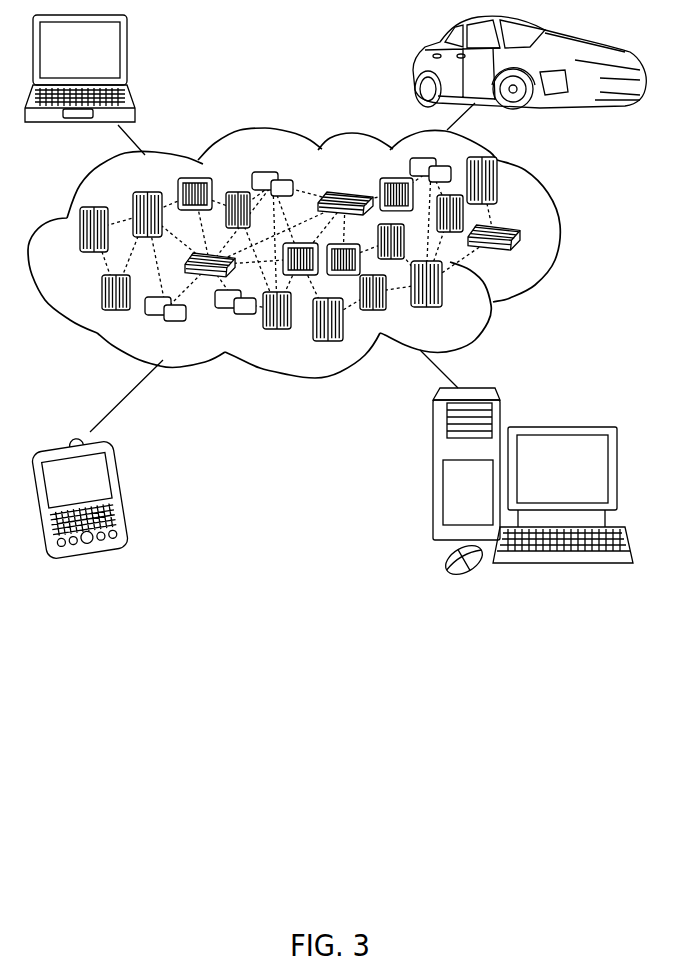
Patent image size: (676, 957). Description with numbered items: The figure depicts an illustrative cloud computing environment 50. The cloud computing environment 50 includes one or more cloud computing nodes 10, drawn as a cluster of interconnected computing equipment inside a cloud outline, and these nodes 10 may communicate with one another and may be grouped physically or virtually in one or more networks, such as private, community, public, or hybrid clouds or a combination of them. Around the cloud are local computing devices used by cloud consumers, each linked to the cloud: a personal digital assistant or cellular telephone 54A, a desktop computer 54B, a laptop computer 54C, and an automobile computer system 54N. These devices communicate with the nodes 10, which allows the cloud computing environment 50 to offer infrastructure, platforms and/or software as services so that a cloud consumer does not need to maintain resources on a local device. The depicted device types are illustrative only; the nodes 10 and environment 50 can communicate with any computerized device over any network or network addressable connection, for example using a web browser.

The cloud computing node 10 is at (530, 258).
The cloud computing environment 50 is at (562, 236).
The personal digital assistant (PDA) or cellular telephone 54A is at (120, 486).
The desktop computer 54B is at (558, 426).
The laptop computer 54C is at (128, 61).
The automobile computer system 54N is at (418, 68).